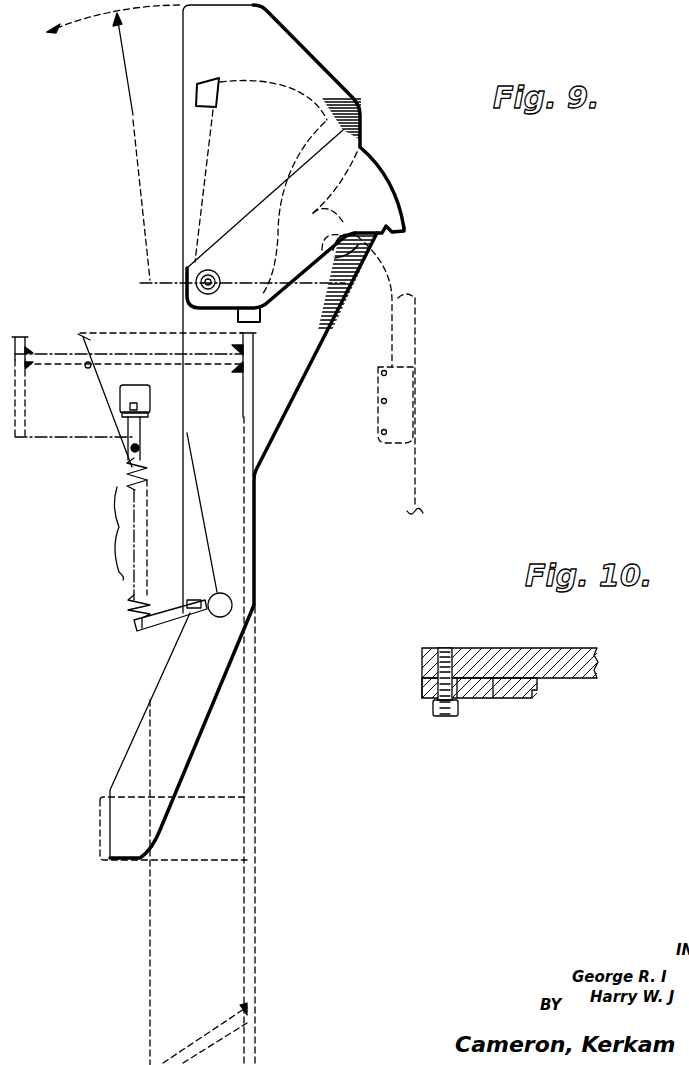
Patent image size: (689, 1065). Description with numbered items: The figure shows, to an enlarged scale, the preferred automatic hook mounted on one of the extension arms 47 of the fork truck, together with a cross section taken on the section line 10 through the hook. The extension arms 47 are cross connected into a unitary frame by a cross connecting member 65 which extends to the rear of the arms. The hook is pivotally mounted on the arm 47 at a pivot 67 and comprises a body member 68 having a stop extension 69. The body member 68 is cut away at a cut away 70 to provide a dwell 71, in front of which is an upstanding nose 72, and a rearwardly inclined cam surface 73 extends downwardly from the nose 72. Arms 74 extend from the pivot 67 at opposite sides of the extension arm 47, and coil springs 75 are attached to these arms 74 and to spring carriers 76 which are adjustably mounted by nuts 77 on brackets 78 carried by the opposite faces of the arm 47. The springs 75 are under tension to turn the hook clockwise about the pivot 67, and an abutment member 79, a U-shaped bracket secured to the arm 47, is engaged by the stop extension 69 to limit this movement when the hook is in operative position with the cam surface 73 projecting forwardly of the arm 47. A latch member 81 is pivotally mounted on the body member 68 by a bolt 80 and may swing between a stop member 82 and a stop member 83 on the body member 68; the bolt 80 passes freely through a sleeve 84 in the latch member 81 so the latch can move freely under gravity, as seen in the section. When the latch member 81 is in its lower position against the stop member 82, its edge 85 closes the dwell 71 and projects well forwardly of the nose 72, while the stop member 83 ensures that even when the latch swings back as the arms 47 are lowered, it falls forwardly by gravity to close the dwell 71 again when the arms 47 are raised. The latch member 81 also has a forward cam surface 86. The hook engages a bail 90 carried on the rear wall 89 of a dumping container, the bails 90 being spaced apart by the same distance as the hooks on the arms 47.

In FIG. 9, the section line 10 is at (150, 283).
In FIG. 9, the extension arm 47 is at (232, 777).
In FIG. 10, the extension arm 47 is at (530, 660).
In FIG. 9, the cross connecting member 65 is at (78, 433).
In FIG. 9, the pivot 67 is at (237, 600).
In FIG. 9, the body member 68 is at (306, 352).
In FIG. 9, the stop extension 69 is at (165, 746).
In FIG. 9, the cut away 70 is at (316, 212).
In FIG. 9, the dwell 71 is at (330, 262).
In FIG. 9, the upstanding nose 72 is at (378, 243).
In FIG. 9, the cam surface 73 is at (335, 322).
In FIG. 9, the arm 74 is at (152, 632).
In FIG. 9, the coil spring 75 is at (126, 550).
In FIG. 9, the spring carrier 76 is at (137, 432).
In FIG. 9, the nut 77 is at (127, 408).
In FIG. 9, the bracket 78 is at (142, 396).
In FIG. 9, the abutment member 79 is at (102, 827).
In FIG. 9, the bolt 80 is at (216, 274).
In FIG. 10, the bolt 80 is at (450, 650).
In FIG. 9, the latch member 81 is at (360, 160).
In FIG. 10, the latch member 81 is at (517, 698).
In FIG. 9, the stop member 82 is at (250, 307).
In FIG. 10, the stop member 82 is at (480, 698).
In FIG. 9, the stop member 83 is at (203, 88).
In FIG. 10, the sleeve 84 is at (433, 687).
In FIG. 9, the edge 85 is at (396, 229).
In FIG. 9, the forward cam surface 86 is at (380, 167).
In FIG. 9, the rear wall 89 is at (417, 473).
In FIG. 9, the bail 90 is at (410, 297).